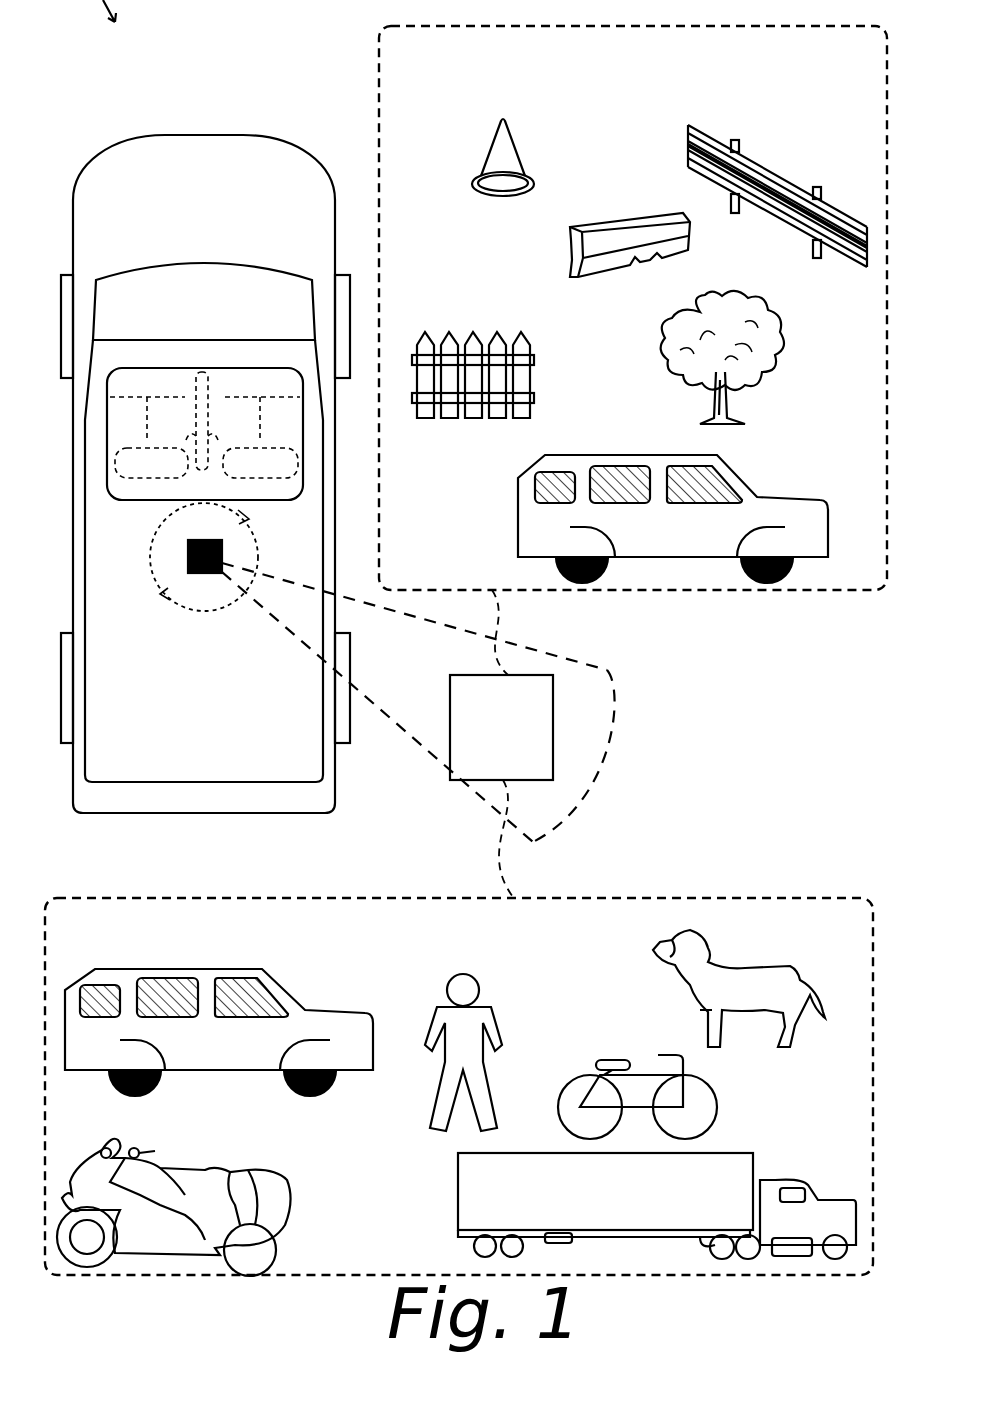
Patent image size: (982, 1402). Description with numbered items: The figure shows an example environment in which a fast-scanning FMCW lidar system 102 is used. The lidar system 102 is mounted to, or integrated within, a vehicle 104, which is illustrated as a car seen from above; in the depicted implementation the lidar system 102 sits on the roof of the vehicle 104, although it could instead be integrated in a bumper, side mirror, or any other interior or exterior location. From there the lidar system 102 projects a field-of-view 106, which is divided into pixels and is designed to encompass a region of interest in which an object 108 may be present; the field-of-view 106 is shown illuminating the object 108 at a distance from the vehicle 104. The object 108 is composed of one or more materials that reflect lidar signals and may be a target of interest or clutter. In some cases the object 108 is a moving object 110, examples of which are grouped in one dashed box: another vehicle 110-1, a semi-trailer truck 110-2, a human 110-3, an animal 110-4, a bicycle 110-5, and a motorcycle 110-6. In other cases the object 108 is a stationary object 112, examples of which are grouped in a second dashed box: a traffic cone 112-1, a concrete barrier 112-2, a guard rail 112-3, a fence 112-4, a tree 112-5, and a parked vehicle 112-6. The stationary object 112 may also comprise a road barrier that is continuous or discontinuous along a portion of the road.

The fast-scanning FMCW lidar system 102 is at (204, 575).
The vehicle 104 is at (215, 133).
The field-of-view 106 is at (600, 672).
The object 108 is at (553, 730).
The moving object 110 is at (459, 1086).
The vehicle 110-1 is at (287, 995).
The semi-trailer truck 110-2 is at (456, 1178).
The human 110-3 is at (492, 1012).
The animal 110-4 is at (738, 968).
The bicycle 110-5 is at (718, 1103).
The motorcycle 110-6 is at (155, 1160).
The stationary object 112 is at (633, 308).
The traffic cone 112-1 is at (492, 150).
The concrete barrier 112-2 is at (570, 248).
The guard rail 112-3 is at (690, 140).
The fence 112-4 is at (527, 342).
The tree 112-5 is at (753, 312).
The parked vehicle 112-6 is at (755, 493).